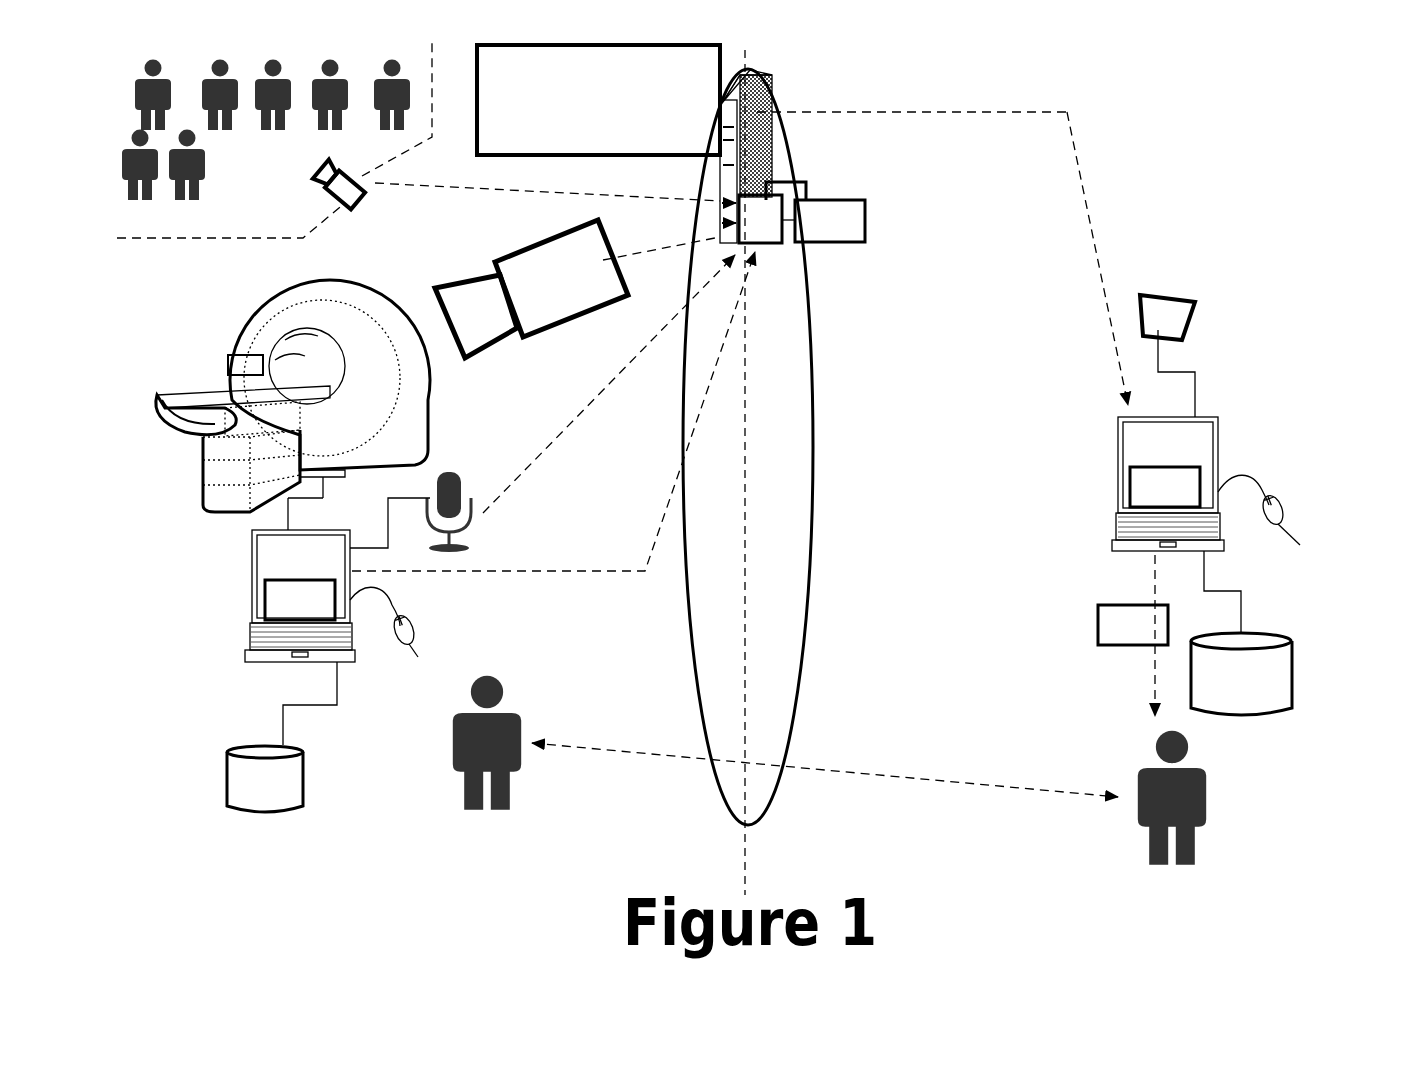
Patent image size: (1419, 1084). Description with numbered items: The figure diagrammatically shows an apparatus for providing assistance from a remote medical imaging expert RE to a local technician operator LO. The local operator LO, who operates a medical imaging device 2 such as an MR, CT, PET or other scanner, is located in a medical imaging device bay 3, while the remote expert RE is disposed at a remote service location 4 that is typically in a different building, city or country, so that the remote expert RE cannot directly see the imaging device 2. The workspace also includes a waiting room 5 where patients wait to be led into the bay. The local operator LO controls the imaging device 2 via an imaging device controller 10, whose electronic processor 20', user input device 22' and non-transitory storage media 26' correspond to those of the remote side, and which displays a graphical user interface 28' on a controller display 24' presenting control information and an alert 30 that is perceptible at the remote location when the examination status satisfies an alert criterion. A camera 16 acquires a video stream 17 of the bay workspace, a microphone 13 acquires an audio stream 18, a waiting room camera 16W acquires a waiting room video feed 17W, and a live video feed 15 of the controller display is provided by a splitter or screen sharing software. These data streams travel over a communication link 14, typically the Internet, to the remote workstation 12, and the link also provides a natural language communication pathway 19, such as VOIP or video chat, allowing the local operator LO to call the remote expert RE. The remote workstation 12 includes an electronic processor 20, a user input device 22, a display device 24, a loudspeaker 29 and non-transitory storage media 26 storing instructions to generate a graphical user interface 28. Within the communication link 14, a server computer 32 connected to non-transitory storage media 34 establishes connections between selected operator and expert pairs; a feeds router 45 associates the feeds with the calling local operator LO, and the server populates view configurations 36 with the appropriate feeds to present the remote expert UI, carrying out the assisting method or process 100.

The medical imaging device 2 is at (230, 340).
The medical imaging device bay 3 is at (393, 866).
The remote service location 4 is at (889, 866).
The waiting room 5 is at (289, 196).
The imaging device controller 10 is at (287, 603).
The remote workstation 12 is at (1050, 337).
The microphone 13 is at (463, 480).
The communication link 14 is at (798, 295).
The live video feed of the controller display 15 is at (650, 555).
The camera 16 is at (505, 243).
The waiting room camera 16W is at (356, 204).
The video stream 17 is at (657, 245).
The waiting room video feed 17W is at (535, 188).
The audio stream 18 is at (612, 383).
The natural language communication pathway 19 is at (622, 752).
The electronic processor 20 is at (1132, 484).
The electronic processor 20' is at (254, 606).
The user input device 22 is at (1280, 518).
The user input device 22' is at (397, 636).
The display device 24 is at (1168, 448).
The controller display 24' is at (301, 562).
The non-transitory storage media 26 is at (1290, 633).
The non-transitory storage media 26' is at (314, 737).
The graphical user interface 28 is at (1165, 487).
The graphical user interface 28' is at (300, 600).
The loudspeaker 29 is at (1183, 303).
The alert 30 is at (1115, 641).
The server computer 32 is at (775, 156).
The non-transitory storage media 34 is at (812, 183).
The view configurations 36 is at (812, 237).
The feeds router 45 is at (776, 238).
The assisting method or process 100 is at (666, 129).
The local technician operator LO is at (456, 767).
The remote medical imaging expert RE is at (1140, 820).